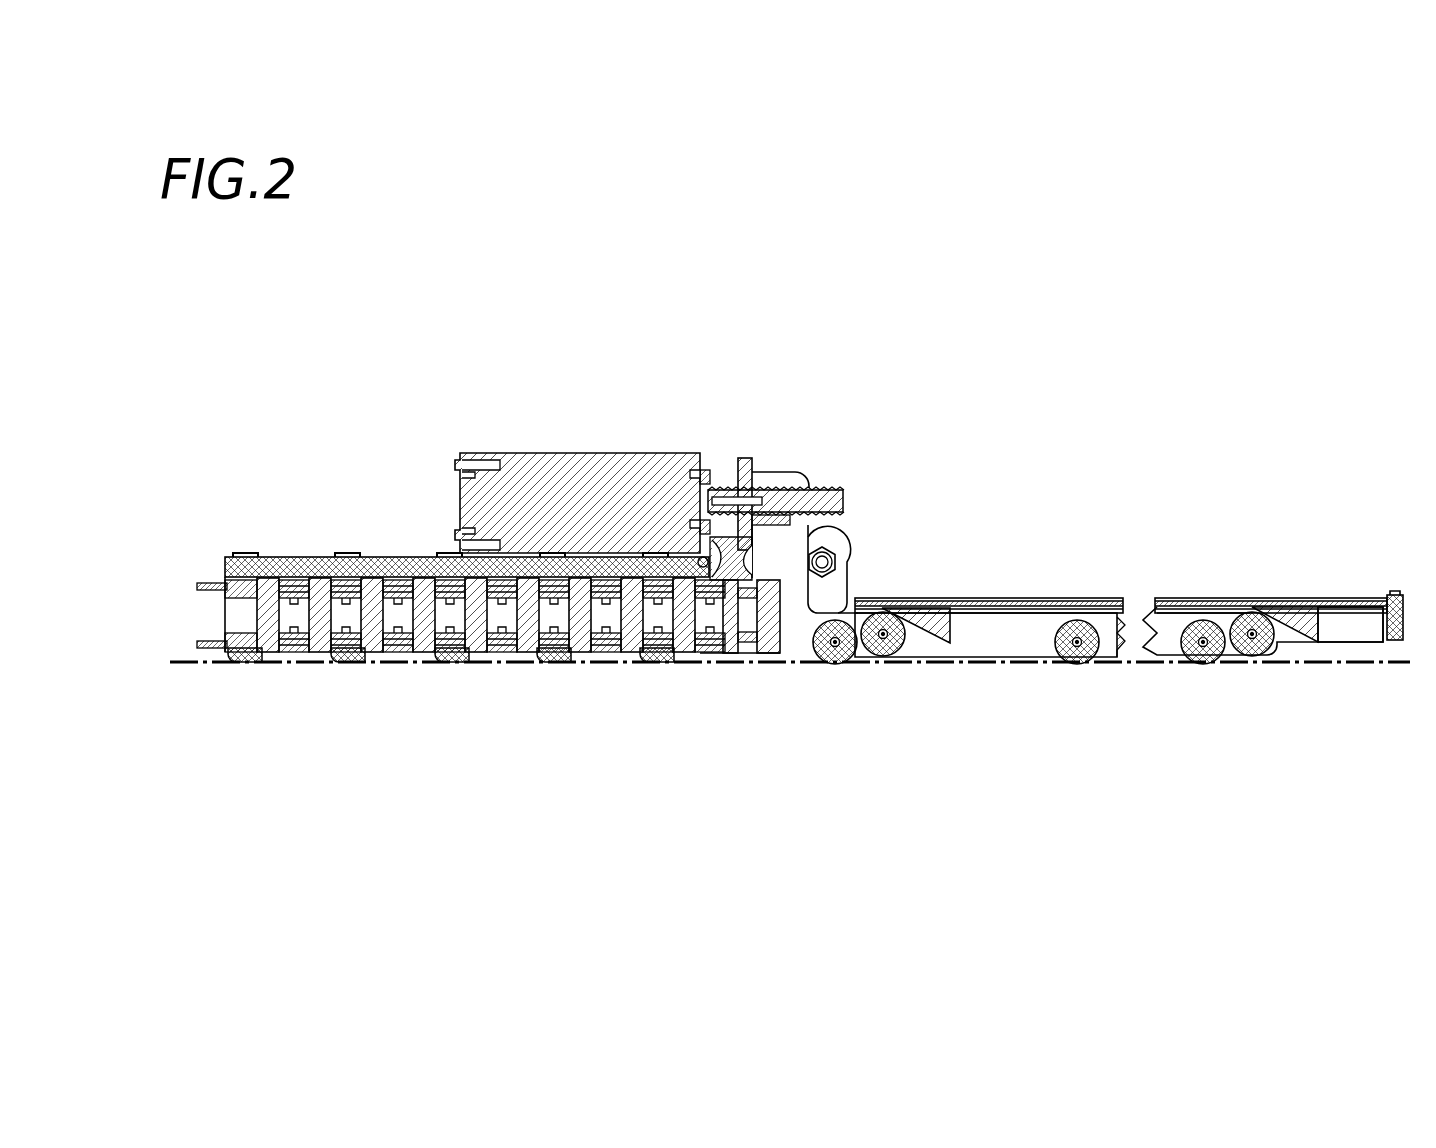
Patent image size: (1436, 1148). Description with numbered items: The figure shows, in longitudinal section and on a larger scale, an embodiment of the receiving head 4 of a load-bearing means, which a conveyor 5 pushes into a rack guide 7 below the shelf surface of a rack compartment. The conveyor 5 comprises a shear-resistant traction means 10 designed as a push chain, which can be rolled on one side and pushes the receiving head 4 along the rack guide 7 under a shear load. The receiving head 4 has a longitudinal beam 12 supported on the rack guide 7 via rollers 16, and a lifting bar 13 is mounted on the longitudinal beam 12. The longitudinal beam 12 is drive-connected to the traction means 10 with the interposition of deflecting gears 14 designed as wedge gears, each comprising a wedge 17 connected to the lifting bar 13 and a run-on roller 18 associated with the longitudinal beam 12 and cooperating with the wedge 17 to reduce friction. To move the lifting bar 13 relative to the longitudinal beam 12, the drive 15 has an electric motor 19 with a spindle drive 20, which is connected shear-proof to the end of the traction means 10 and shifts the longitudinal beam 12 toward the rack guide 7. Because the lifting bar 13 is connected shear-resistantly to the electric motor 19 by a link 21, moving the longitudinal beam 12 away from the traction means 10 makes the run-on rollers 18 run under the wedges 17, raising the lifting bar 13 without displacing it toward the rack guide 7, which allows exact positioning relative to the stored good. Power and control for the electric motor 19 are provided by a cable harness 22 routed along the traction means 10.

The receiving head 4 is at (1355, 584).
The conveyor 5 is at (460, 586).
The rack guide 7 is at (1335, 666).
The shear-resistant traction means 10 is at (480, 620).
The longitudinal beam 12 is at (1015, 640).
The lifting bar 13 is at (1070, 588).
The deflecting gears 14 is at (927, 647).
The drive 15 is at (775, 457).
The rollers 16 is at (835, 664).
The wedge 17 is at (938, 625).
The run-on roller 18 is at (885, 657).
The electric motor 19 is at (568, 486).
The spindle drive 20 is at (830, 502).
The link 21 is at (740, 563).
The cable harness 22 is at (390, 566).